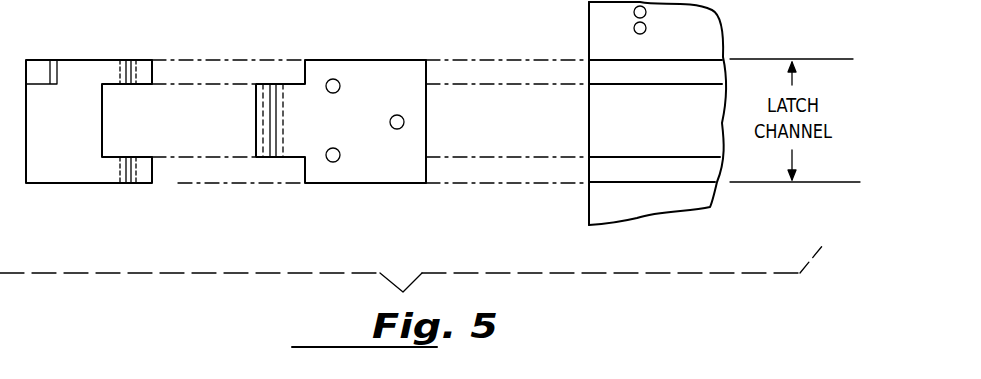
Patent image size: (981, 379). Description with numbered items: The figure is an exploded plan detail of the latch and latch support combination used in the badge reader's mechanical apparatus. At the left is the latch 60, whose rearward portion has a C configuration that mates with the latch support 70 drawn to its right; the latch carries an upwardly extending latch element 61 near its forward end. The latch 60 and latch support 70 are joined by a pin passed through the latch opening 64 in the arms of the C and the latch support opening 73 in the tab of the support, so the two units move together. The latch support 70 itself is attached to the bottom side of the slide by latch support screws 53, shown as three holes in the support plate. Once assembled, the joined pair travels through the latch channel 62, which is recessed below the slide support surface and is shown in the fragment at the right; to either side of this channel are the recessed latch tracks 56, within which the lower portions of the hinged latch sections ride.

The latch support screws 53 is at (338, 91).
The latch tracks 56 is at (610, 67).
The latch 60 is at (77, 167).
The latch element 61 is at (35, 70).
The latch channel 62 is at (698, 60).
The latch opening 64 is at (133, 72).
The latch support 70 is at (373, 77).
The latch support opening 73 is at (267, 97).